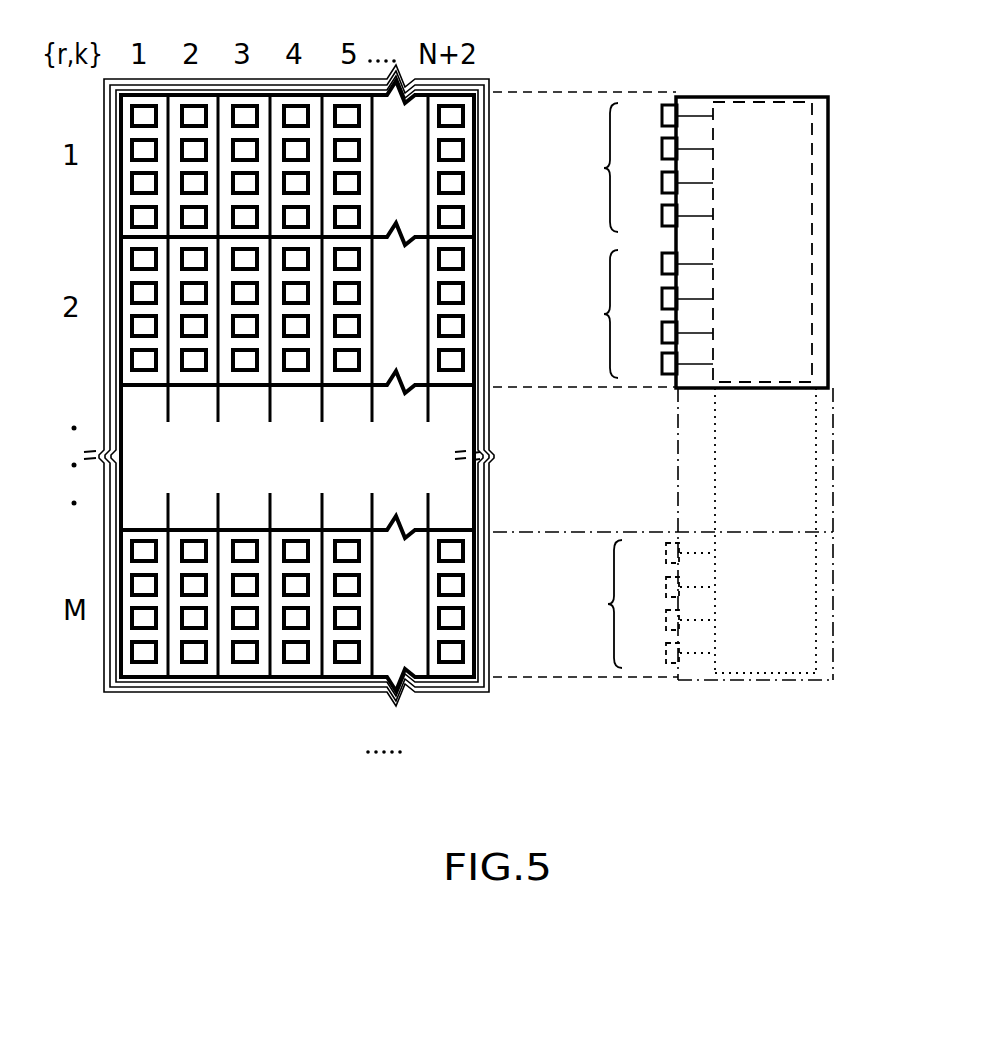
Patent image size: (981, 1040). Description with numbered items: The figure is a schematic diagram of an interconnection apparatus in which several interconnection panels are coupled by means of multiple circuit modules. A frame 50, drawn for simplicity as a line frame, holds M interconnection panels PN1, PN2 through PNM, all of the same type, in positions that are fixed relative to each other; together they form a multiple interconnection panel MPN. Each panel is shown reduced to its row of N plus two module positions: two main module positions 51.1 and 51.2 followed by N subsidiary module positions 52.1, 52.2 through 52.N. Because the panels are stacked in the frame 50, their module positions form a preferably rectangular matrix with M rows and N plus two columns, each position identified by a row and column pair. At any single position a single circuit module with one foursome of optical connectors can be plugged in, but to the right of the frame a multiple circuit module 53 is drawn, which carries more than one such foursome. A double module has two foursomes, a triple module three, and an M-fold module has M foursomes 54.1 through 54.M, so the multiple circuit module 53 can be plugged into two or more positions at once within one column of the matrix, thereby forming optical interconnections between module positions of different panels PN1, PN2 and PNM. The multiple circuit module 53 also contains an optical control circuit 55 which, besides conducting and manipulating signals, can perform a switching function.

The frame 50 is at (123, 688).
The main module position 51.1 is at (150, 667).
The main module position 51.2 is at (203, 672).
The subsidiary module position 52.1 is at (255, 672).
The subsidiary module position 52.2 is at (305, 670).
The subsidiary module position 52.N is at (455, 670).
The multiple circuit module 53 is at (700, 97).
The foursome of optical connectors 54.1 is at (624, 240).
The foursome of optical connectors 54.M is at (625, 603).
The optical control circuit 55 is at (784, 100).
The multiple interconnection panel MPN is at (493, 75).
The interconnection panel PN1 is at (480, 224).
The interconnection panel PN2 is at (480, 372).
The interconnection panel PNM is at (480, 663).